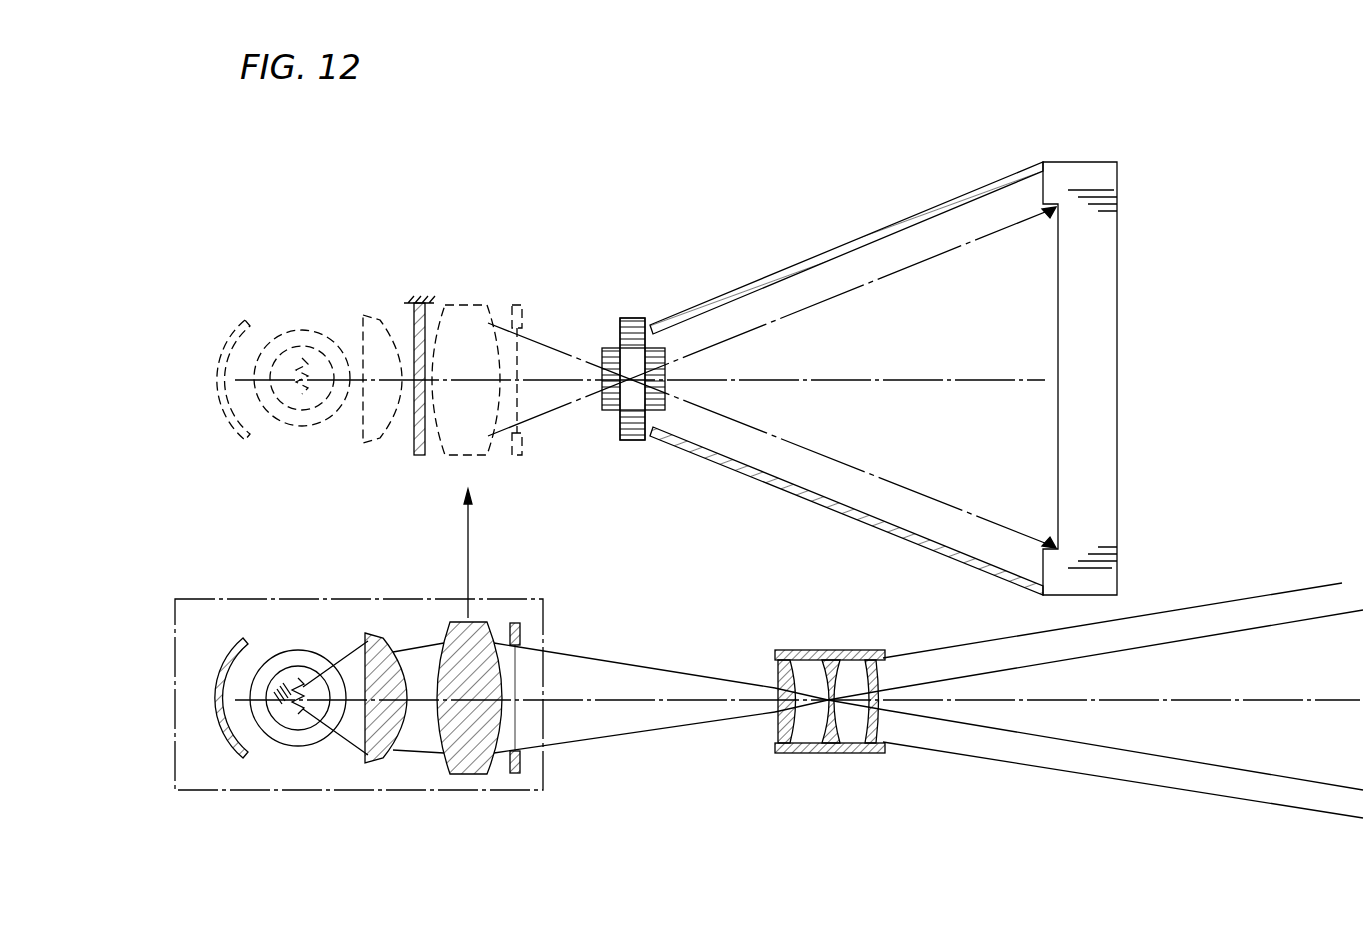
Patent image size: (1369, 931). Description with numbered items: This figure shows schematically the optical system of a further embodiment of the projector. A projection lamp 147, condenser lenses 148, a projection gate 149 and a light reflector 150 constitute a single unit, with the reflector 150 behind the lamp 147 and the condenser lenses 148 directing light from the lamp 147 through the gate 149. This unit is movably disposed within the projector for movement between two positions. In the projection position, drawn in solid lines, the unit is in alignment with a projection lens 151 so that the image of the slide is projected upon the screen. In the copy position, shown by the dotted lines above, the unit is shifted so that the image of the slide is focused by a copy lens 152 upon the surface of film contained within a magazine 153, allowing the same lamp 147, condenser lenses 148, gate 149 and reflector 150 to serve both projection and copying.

The projection lamp 147 is at (298, 741).
The condenser lenses 148 is at (386, 759).
The projection gate 149 is at (517, 775).
The light reflector 150 is at (238, 758).
The projection lens 151 is at (840, 754).
The copy lens 152 is at (632, 326).
The magazine 153 is at (1117, 404).